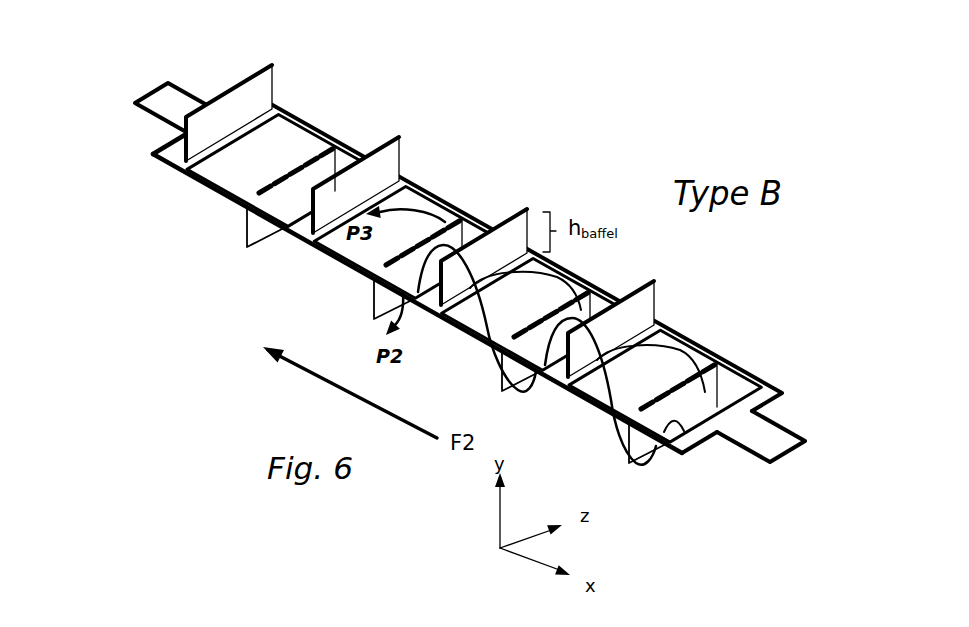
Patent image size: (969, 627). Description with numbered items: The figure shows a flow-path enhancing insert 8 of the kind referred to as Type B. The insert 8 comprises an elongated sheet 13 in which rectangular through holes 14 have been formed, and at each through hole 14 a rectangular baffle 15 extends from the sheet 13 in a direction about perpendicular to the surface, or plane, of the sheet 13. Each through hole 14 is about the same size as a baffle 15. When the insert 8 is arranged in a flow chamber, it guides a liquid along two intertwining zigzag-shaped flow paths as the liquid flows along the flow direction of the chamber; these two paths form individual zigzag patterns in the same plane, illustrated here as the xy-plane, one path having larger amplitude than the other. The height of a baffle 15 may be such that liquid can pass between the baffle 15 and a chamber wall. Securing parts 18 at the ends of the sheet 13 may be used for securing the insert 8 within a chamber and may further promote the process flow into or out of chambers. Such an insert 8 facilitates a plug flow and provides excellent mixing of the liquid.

The insert 8 is at (170, 348).
The elongated sheet 13 is at (224, 201).
The through hole 14 is at (406, 206).
The rectangular baffle 15 is at (247, 85).
The securing part 18 is at (178, 107).